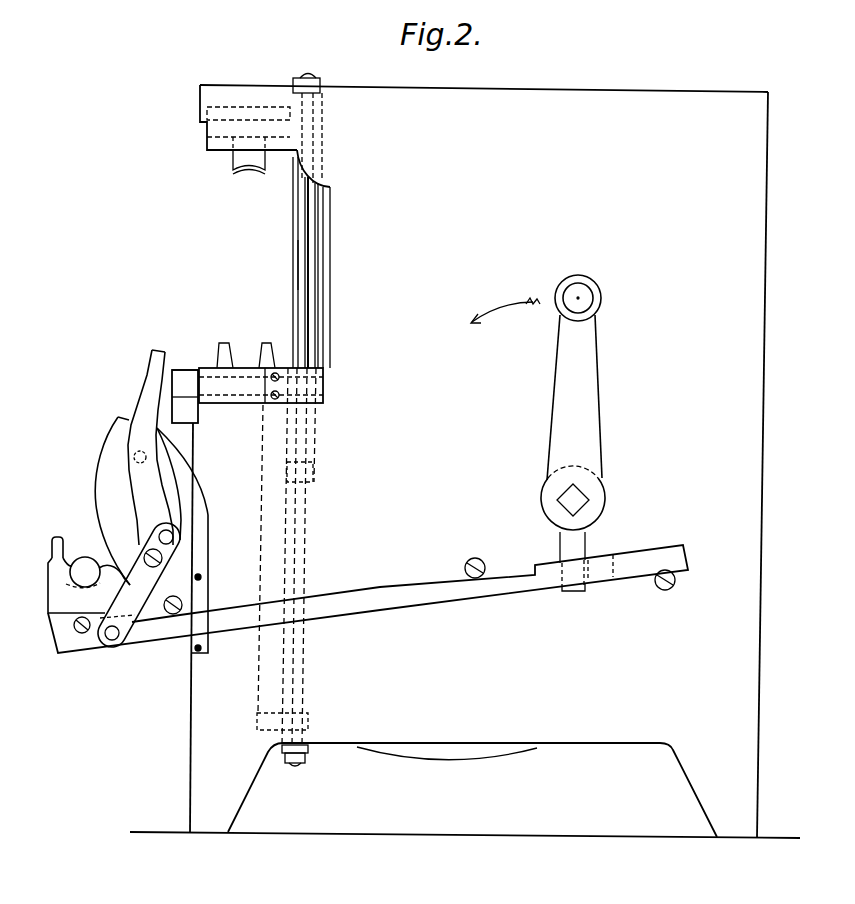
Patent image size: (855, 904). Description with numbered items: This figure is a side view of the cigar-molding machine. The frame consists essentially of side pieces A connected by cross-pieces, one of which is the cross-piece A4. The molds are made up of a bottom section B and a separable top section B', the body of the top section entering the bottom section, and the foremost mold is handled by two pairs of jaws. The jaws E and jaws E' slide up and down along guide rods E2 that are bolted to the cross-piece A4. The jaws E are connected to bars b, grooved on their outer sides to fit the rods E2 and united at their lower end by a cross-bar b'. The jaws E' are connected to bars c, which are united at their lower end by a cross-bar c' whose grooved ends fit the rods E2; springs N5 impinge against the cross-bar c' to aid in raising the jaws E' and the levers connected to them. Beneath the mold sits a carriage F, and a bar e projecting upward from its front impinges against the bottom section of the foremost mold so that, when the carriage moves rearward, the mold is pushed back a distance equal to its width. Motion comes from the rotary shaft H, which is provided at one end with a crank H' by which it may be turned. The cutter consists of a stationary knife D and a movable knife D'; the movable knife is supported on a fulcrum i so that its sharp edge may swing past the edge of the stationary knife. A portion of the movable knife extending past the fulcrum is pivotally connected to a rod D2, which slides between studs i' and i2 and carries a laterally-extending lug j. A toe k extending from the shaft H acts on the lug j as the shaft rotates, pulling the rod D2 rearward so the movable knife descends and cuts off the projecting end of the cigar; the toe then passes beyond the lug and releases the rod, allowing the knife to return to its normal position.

The side piece A is at (465, 461).
The cross-piece A4 is at (322, 87).
The jaw E is at (250, 136).
The top section B' is at (249, 171).
The bar b is at (303, 262).
The rod E2 is at (297, 262).
The jaw E' is at (261, 385).
The carriage F is at (185, 396).
The bar e is at (185, 361).
The bottom section B is at (246, 355).
The movable knife D' is at (151, 501).
The stationary knife D is at (89, 575).
The rod D2 is at (62, 624).
The fulcrum i is at (139, 585).
The bar c is at (282, 556).
The cross-bar b' is at (312, 425).
The cross-bar c' is at (282, 721).
The crank H' is at (536, 377).
The shaft H is at (573, 498).
The toe k is at (572, 561).
The lug j is at (600, 568).
The stud i' is at (476, 558).
The stud i2 is at (671, 586).
The spring N5 is at (472, 790).